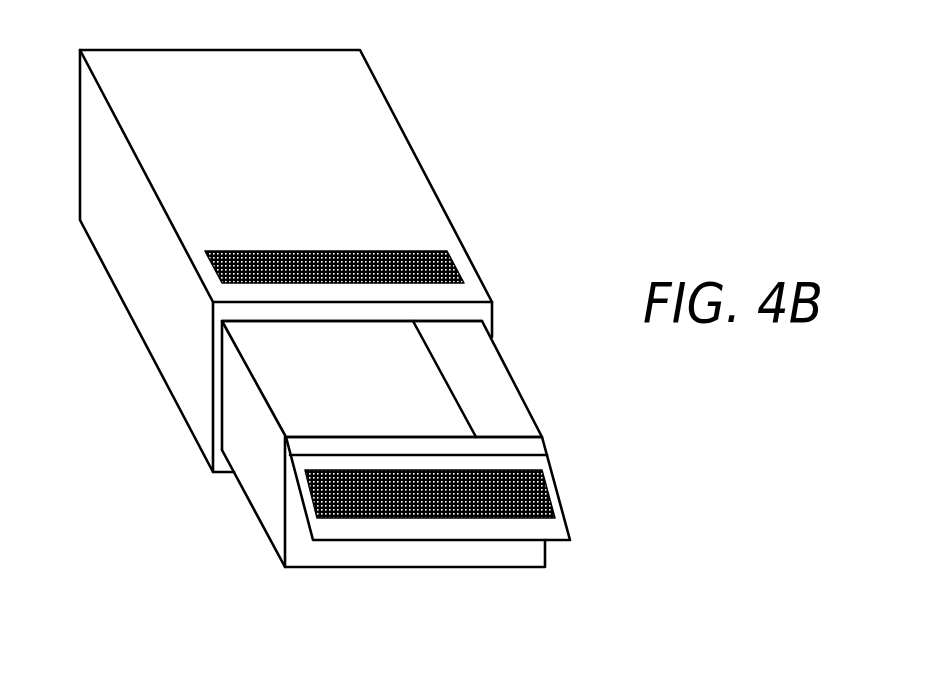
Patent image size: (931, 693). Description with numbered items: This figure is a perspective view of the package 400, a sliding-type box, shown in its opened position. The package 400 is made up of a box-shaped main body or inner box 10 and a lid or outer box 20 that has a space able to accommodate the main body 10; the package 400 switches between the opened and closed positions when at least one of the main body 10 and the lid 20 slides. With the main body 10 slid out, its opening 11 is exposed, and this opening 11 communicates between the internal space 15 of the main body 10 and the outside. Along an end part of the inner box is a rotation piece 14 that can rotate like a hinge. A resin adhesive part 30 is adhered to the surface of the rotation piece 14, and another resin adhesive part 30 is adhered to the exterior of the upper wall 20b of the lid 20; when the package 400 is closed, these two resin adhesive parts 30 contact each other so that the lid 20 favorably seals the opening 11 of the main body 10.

The package 400 is at (503, 92).
The lid (outer box) 20 is at (372, 147).
The upper wall of the lid 20b is at (212, 97).
The main body (inner box) 10 is at (262, 480).
The opening 11 is at (405, 387).
The internal space 15 is at (343, 393).
The rotation piece 14 is at (375, 525).
The resin adhesive part 30 is at (443, 265).